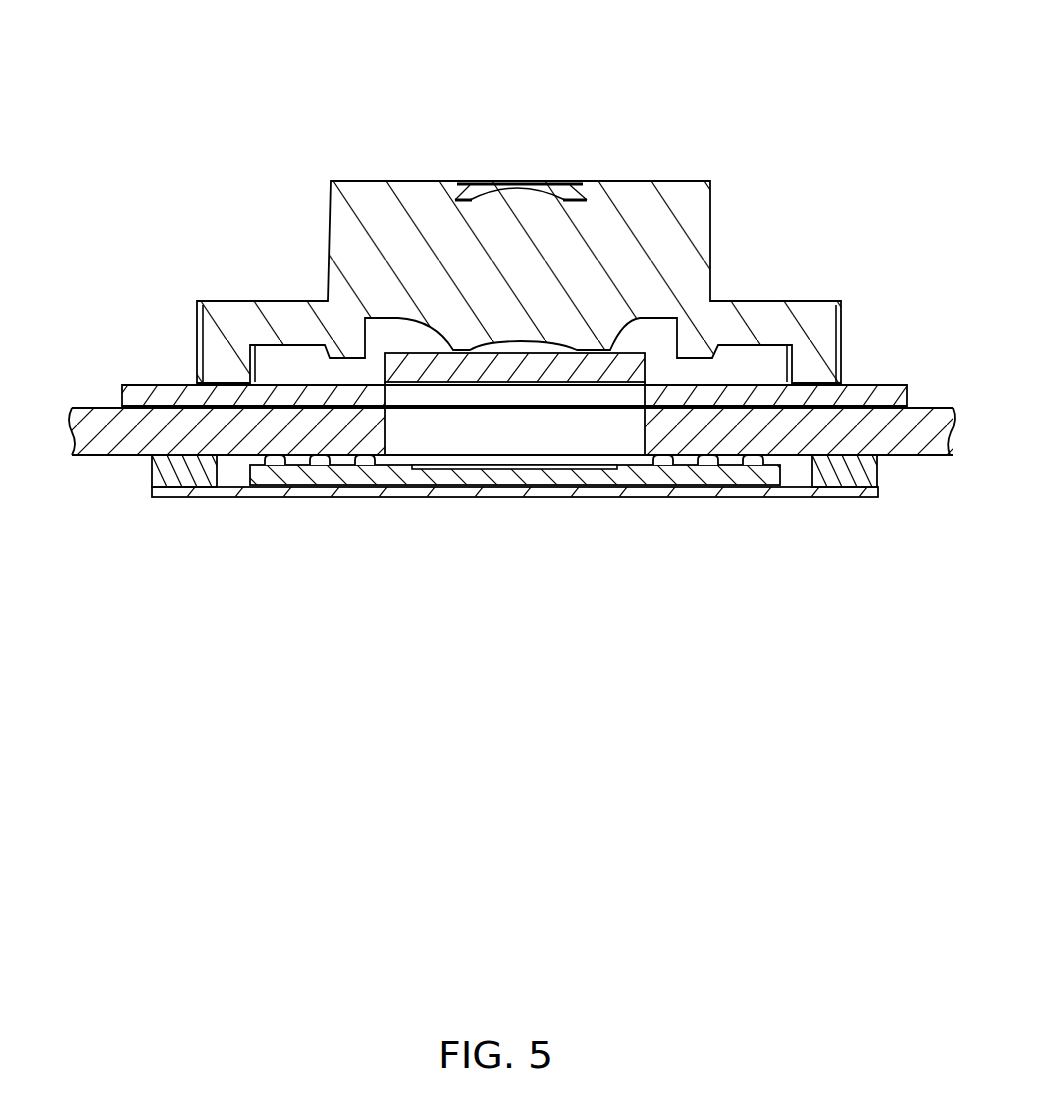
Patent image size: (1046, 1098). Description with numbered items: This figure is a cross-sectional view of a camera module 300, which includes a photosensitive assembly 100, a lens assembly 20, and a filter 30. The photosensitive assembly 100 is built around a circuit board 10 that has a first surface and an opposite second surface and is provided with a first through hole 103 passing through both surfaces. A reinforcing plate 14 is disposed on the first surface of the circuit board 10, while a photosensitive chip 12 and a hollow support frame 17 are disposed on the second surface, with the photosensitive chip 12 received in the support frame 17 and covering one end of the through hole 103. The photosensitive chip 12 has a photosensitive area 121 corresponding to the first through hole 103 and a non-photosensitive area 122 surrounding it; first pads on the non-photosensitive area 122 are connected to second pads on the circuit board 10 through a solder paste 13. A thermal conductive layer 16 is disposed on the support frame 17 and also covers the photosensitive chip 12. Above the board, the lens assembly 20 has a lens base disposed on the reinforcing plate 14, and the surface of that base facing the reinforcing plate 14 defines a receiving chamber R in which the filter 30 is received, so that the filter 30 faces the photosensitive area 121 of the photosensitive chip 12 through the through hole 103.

The camera module 300 is at (557, 48).
The lens assembly 20 is at (697, 214).
The receiving chamber R is at (378, 337).
The filter 30 is at (622, 368).
The photosensitive assembly 100 is at (502, 453).
The reinforcing plate 14 is at (857, 392).
The circuit board 10 is at (515, 453).
The first through hole 103 is at (424, 432).
The support frame 17 is at (167, 476).
The thermal conductive layer 16 is at (246, 492).
The solder paste 13 is at (318, 462).
The photosensitive chip 12 is at (515, 518).
The photosensitive area 121 is at (513, 480).
The non-photosensitive area 122 is at (683, 472).